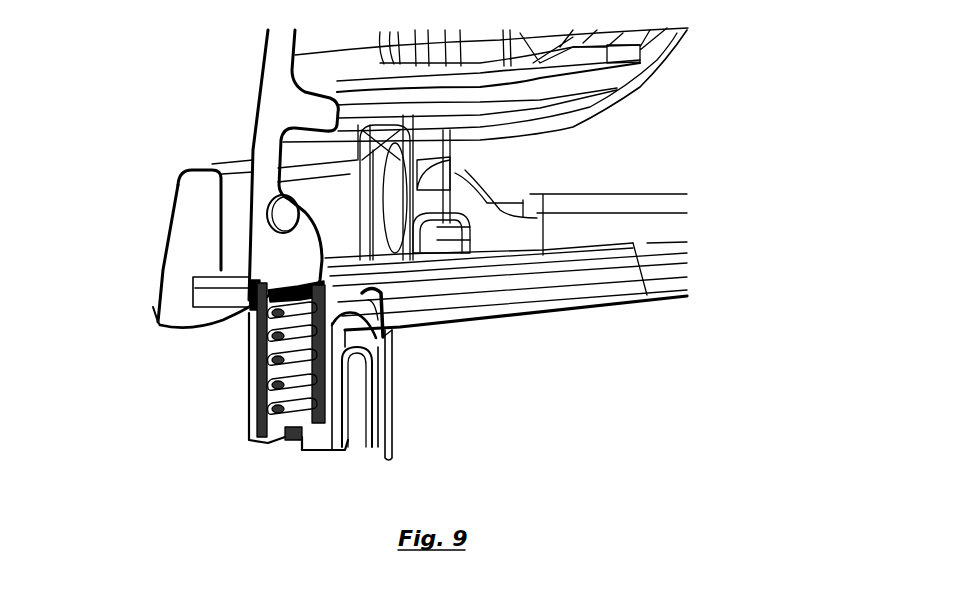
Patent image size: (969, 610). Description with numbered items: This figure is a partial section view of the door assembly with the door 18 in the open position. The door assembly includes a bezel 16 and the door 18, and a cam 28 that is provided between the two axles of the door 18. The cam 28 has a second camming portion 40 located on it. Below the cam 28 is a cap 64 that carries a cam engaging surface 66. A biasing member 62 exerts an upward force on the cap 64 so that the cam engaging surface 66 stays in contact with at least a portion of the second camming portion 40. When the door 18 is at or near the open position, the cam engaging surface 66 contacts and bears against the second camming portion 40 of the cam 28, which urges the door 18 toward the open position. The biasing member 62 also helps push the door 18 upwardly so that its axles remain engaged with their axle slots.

The bezel 16 is at (192, 195).
The door 18 is at (281, 83).
The cam 28 is at (338, 210).
The second camming portion 40 is at (307, 288).
The biasing member 62 is at (293, 379).
The cap 64 is at (327, 381).
The cam engaging surface 66 is at (278, 288).